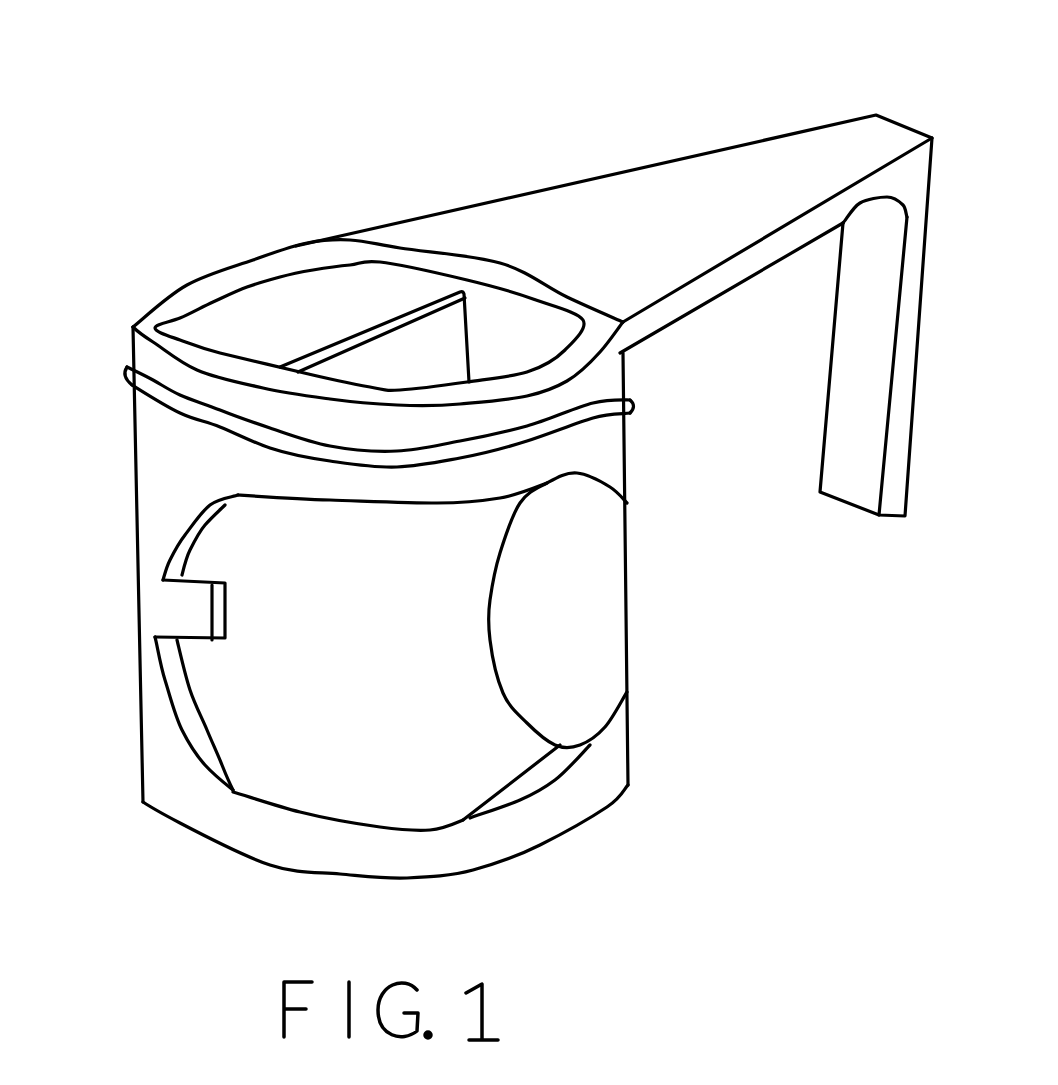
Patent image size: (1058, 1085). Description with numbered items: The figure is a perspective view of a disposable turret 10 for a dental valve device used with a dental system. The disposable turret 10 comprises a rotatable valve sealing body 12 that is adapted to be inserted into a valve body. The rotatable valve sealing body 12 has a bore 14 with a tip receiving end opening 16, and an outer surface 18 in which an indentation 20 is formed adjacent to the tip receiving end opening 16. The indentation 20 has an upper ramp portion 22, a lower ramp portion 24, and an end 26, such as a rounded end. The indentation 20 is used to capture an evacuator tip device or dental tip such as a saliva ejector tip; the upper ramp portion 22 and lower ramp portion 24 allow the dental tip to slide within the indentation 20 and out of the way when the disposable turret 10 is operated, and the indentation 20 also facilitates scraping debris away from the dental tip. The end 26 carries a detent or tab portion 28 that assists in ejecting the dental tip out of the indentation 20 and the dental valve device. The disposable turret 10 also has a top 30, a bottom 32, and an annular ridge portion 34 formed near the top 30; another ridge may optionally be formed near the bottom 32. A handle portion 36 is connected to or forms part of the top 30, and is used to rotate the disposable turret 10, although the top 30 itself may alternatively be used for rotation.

The disposable turret 10 is at (328, 116).
The rotatable valve sealing body 12 is at (103, 690).
The bore 14 is at (588, 642).
The tip receiving end opening 16 is at (610, 537).
The outer surface 18 is at (610, 453).
The indentation 20 is at (294, 770).
The upper ramp portion 22 is at (192, 537).
The lower ramp portion 24 is at (188, 715).
The end 26 is at (157, 665).
The detent or tab portion 28 is at (177, 615).
The top 30 is at (355, 310).
The bottom 32 is at (543, 827).
The annular ridge portion 34 is at (633, 403).
The handle portion 36 is at (714, 190).